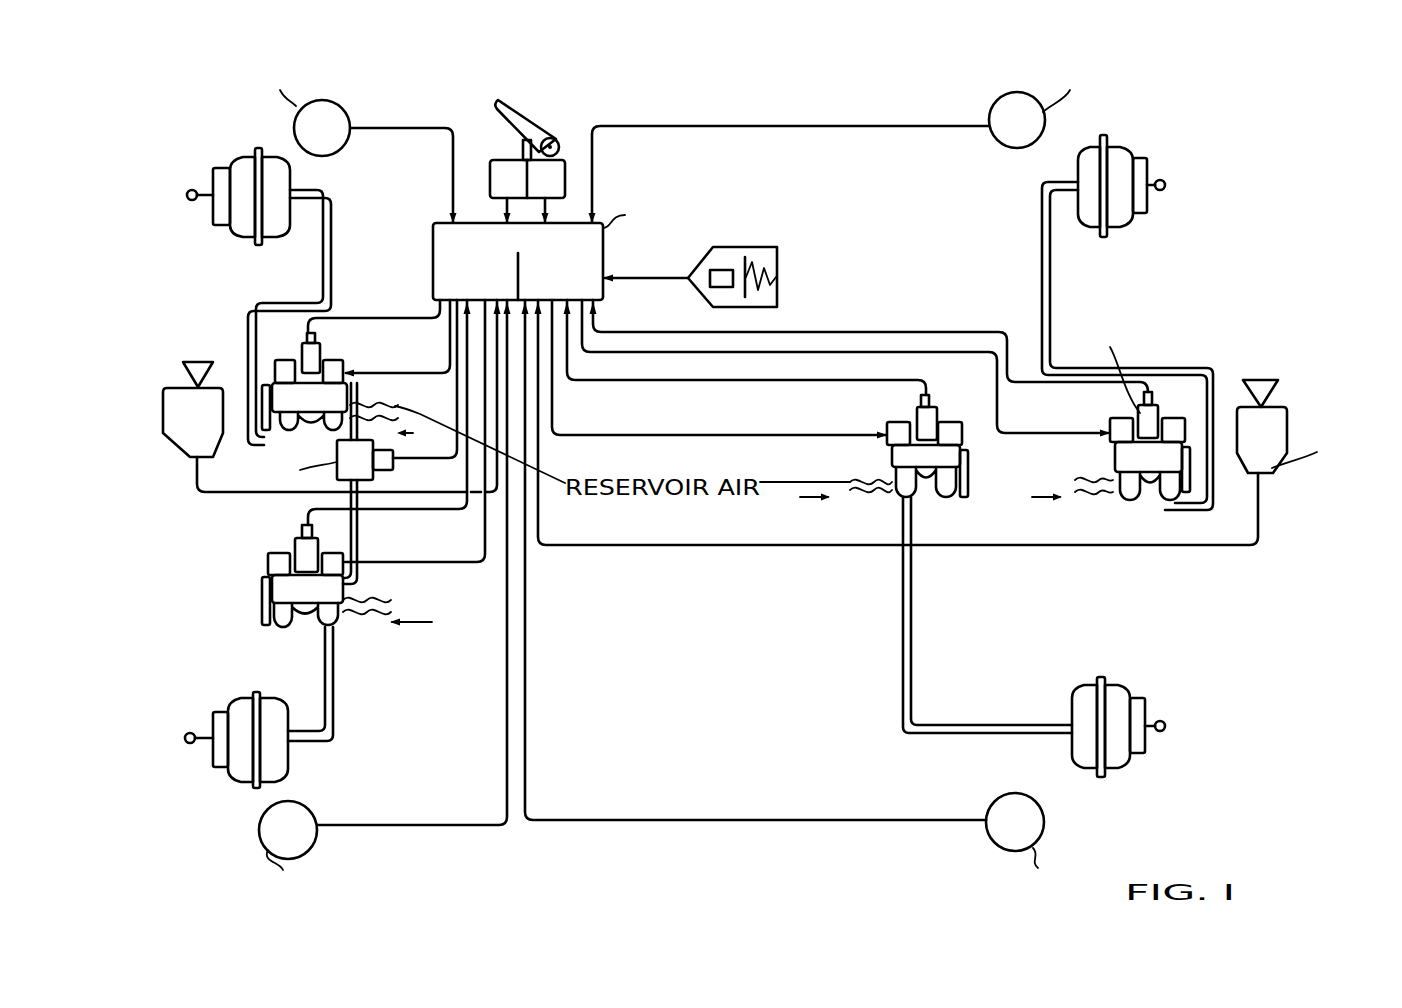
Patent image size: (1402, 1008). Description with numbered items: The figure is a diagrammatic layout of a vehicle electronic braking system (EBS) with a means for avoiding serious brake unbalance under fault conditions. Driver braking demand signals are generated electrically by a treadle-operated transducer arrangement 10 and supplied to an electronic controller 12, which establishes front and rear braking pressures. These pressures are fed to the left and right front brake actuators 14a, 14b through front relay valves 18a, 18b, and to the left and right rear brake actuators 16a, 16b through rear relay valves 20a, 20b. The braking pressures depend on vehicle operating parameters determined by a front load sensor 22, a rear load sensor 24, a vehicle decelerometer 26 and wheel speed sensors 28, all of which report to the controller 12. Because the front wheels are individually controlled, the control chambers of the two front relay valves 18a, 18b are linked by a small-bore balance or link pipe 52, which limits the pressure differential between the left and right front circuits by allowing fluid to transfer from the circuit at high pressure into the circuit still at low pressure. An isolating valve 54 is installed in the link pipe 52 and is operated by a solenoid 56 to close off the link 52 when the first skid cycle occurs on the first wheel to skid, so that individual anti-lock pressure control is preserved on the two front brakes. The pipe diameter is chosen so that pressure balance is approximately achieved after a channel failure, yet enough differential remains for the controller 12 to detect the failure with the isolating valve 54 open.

The treadle-operated transducer arrangement 10 is at (568, 156).
The electronic controller 12 is at (604, 262).
The left front brake actuator 14a is at (281, 224).
The right front brake actuator 14b is at (281, 755).
The left rear brake actuator 16a is at (1120, 217).
The right rear brake actuator 16b is at (1120, 705).
The front relay valve 18a is at (357, 400).
The front relay valve 18b is at (288, 622).
The rear relay valve 20a is at (1143, 490).
The rear relay valve 20b is at (928, 490).
The front load sensor 22 is at (185, 450).
The rear load sensor 24 is at (1235, 458).
The vehicle decelerometer 26 is at (777, 295).
The wheel speed sensor 28 is at (340, 142).
The link pipe 52 is at (362, 530).
The isolating valve 54 is at (390, 477).
The solenoid 56 is at (397, 452).